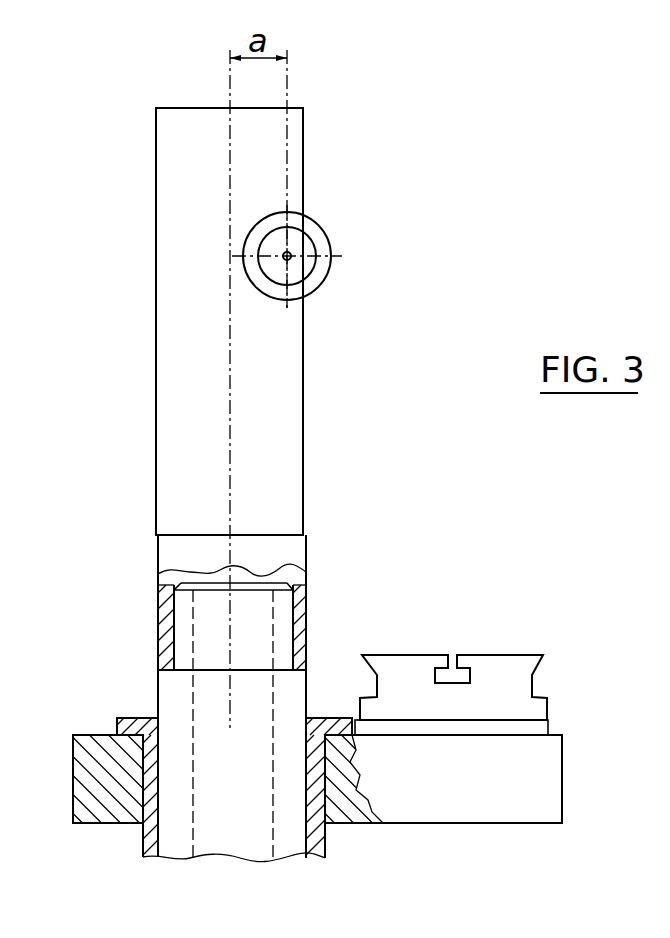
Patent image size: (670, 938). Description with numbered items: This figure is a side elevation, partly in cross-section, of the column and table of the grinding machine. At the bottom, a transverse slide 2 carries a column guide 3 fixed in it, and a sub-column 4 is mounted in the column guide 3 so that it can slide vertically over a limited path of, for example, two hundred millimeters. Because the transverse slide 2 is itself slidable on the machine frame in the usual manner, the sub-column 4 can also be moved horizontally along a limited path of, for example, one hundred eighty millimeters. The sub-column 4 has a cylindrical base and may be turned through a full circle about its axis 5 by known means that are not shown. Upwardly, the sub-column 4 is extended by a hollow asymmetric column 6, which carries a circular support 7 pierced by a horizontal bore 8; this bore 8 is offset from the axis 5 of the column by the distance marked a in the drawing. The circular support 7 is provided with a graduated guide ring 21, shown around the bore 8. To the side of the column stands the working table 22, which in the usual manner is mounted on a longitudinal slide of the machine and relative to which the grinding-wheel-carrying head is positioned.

The transverse slide 2 is at (362, 808).
The column guide 3 is at (140, 721).
The sub-column 4 is at (172, 704).
The axis 5 is at (227, 441).
The hollow asymmetric column 6 is at (290, 408).
The circular support 7 is at (296, 237).
The horizontal bore 8 is at (282, 262).
The graduated guide ring 21 is at (316, 277).
The working table 22 is at (516, 655).